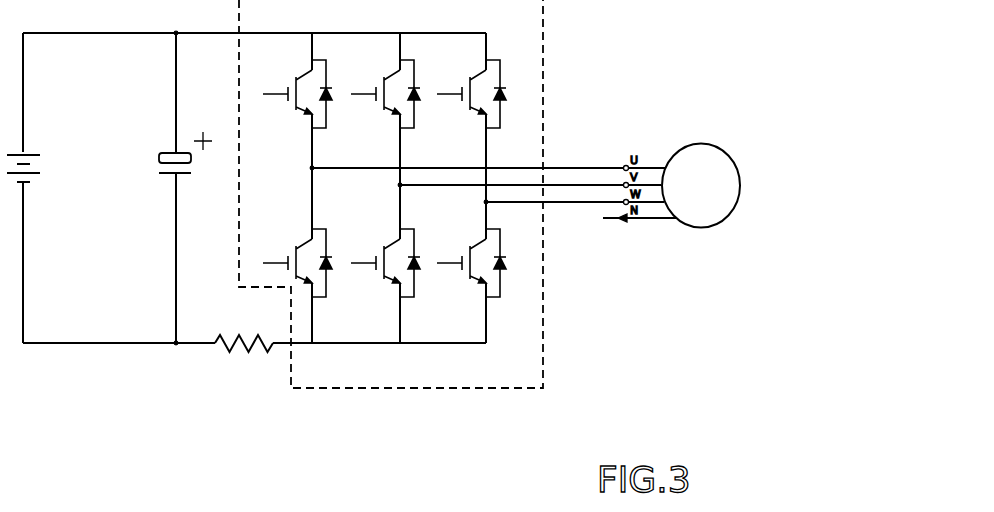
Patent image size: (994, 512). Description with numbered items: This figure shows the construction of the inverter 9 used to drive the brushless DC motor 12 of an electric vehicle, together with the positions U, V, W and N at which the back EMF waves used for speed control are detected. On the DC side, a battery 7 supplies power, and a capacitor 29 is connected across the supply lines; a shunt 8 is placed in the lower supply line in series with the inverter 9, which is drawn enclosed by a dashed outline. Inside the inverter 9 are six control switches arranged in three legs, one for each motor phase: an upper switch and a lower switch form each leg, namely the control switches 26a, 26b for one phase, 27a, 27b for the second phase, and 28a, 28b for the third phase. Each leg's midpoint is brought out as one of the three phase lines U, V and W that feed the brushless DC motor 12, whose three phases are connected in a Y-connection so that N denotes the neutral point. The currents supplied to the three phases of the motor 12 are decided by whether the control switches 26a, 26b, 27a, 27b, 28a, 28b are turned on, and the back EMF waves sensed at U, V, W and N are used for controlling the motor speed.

The battery 7 is at (38, 152).
The capacitor 29 is at (186, 131).
The shunt 8 is at (245, 353).
The inverter 9 is at (543, 42).
The control switch 26a is at (327, 62).
The control switch 27a is at (415, 62).
The control switch 28a is at (500, 60).
The control switch 26b is at (313, 305).
The control switch 27b is at (401, 305).
The control switch 28b is at (488, 302).
The brushless DC motor 12 is at (677, 146).